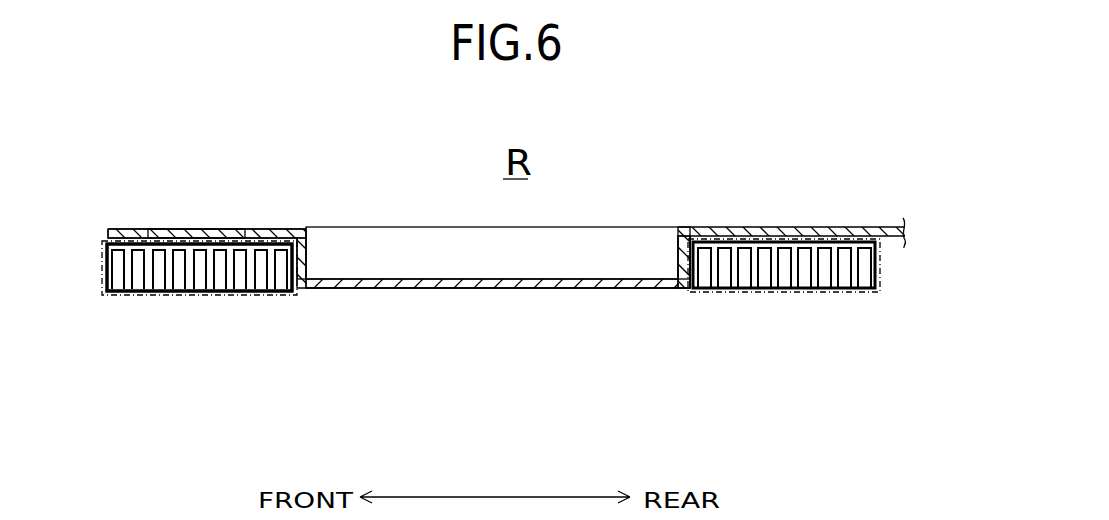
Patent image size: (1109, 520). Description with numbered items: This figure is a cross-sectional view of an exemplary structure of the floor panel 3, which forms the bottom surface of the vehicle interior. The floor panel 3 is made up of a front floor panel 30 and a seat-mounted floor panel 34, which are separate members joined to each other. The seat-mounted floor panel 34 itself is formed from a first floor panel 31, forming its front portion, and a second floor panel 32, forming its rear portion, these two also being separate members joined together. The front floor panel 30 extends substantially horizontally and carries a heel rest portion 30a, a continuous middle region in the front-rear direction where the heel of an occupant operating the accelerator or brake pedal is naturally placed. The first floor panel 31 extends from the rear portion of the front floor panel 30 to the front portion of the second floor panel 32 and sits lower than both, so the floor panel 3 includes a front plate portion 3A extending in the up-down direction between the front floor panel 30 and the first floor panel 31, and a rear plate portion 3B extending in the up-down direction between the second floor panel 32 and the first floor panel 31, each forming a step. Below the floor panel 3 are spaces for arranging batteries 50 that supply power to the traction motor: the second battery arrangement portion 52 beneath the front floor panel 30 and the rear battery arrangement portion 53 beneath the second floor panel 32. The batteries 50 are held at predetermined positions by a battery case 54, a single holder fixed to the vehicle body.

The floor panel 3 is at (678, 405).
The front floor panel 30 is at (275, 296).
The heel rest portion 30a is at (245, 229).
The front plate portion 3A is at (306, 260).
The rear plate portion 3B is at (678, 262).
The first floor panel 31 is at (622, 290).
The second floor panel 32 is at (708, 292).
The seat-mounted floor panel 34 is at (703, 366).
The battery 50 is at (230, 283).
The second battery arrangement portion 52 is at (122, 297).
The rear battery arrangement portion 53 is at (838, 293).
The battery case 54 is at (172, 293).